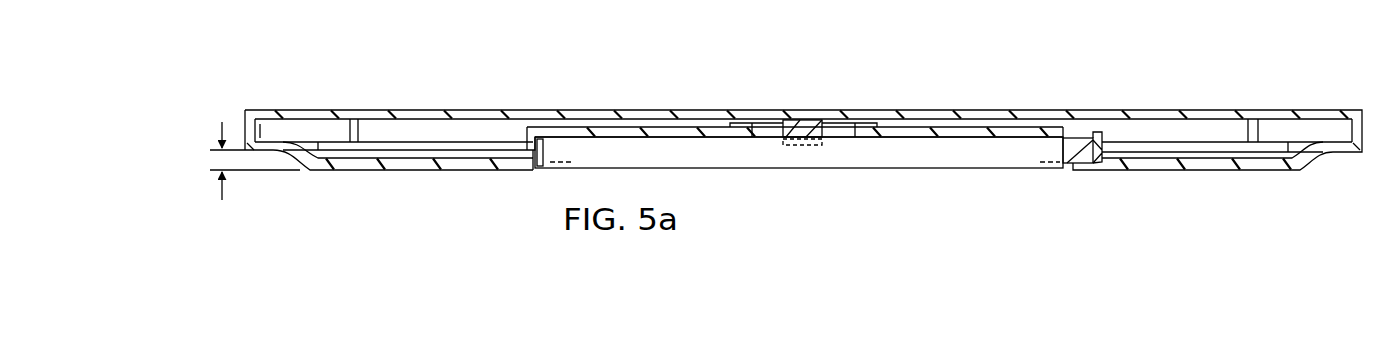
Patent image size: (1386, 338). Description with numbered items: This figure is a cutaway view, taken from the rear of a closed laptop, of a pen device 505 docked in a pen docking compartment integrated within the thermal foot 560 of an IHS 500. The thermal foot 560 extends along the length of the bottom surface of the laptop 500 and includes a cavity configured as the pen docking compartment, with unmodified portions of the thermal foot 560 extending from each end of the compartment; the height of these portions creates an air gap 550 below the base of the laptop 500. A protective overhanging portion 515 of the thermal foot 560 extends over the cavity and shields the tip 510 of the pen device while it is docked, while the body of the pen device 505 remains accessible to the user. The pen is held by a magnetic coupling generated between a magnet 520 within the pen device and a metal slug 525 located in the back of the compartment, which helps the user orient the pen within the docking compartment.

The IHS 500 is at (507, 70).
The pen device 505 is at (934, 174).
The tip of the pen device 510 is at (1074, 150).
The protective overhanging portion of the thermal foot 515 is at (1082, 172).
The magnet 520 is at (800, 146).
The metal slug 525 is at (806, 122).
The air gap 550 is at (222, 192).
The thermal foot 560 is at (410, 161).